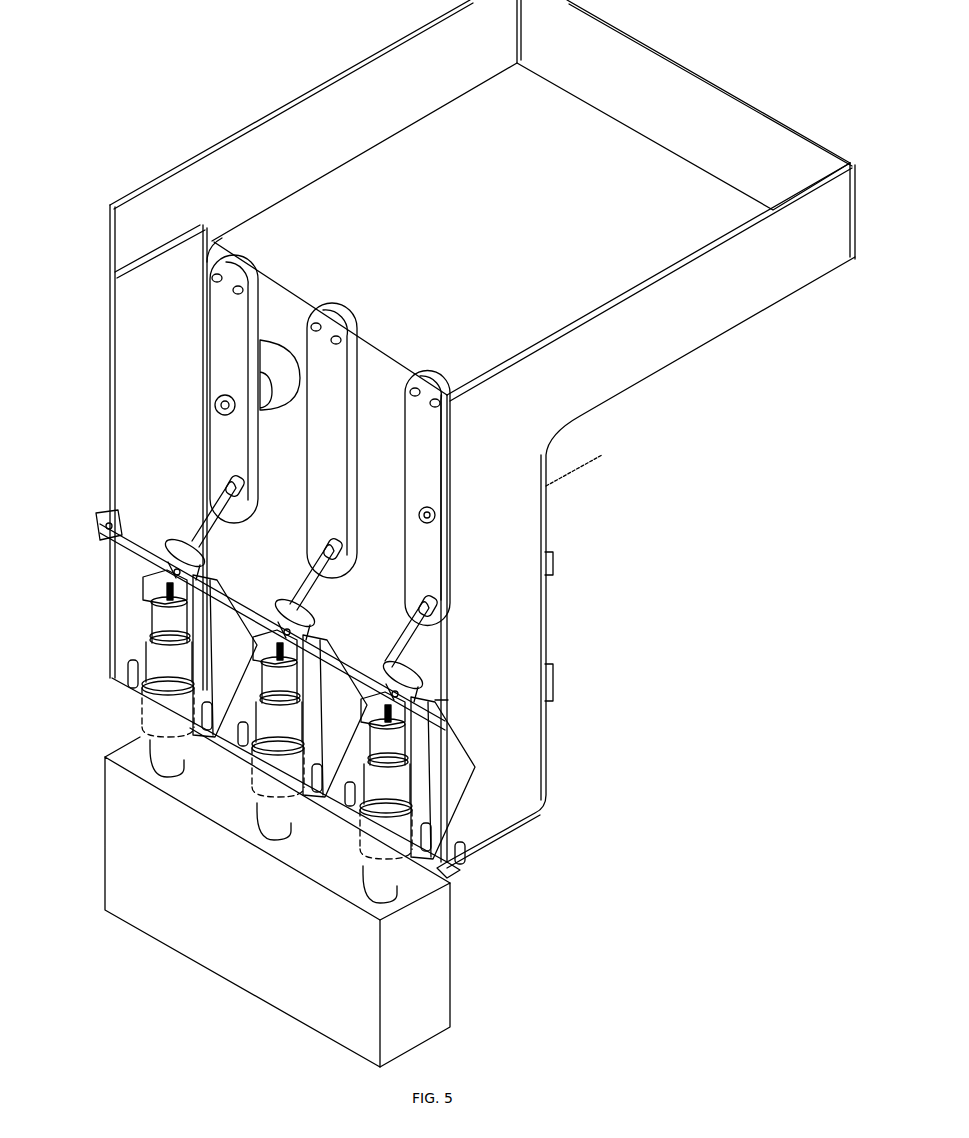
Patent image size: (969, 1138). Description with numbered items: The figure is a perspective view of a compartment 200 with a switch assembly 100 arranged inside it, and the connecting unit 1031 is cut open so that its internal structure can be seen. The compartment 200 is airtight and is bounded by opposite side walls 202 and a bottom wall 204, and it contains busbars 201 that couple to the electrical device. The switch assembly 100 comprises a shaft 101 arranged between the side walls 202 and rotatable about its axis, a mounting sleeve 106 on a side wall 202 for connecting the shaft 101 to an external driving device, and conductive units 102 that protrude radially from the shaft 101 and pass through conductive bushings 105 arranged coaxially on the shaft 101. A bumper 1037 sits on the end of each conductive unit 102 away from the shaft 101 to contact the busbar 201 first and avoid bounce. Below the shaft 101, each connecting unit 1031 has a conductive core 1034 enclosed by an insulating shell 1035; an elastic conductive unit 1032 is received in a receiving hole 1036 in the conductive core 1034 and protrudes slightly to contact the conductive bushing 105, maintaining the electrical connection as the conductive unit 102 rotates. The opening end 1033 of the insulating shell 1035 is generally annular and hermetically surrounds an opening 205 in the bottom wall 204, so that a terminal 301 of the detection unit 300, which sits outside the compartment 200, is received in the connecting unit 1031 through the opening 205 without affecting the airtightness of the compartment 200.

The switch assembly 100 is at (192, 513).
The shaft 101 is at (442, 705).
The conductive unit 102 is at (202, 540).
The conductive bushing 105 is at (195, 555).
The mounting sleeve 106 is at (100, 521).
The compartment 200 is at (296, 85).
The busbar 201 is at (232, 475).
The side wall 202 is at (135, 405).
The bottom wall 204 is at (452, 870).
The opening 205 is at (130, 700).
The detection unit 300 is at (430, 952).
The terminal 301 is at (165, 765).
The connecting unit 1031 is at (215, 605).
The elastic conductive unit 1032 is at (152, 571).
The opening end 1033 is at (125, 700).
The conductive core 1034 is at (150, 606).
The insulating shell 1035 is at (130, 650).
The receiving hole 1036 is at (155, 592).
The bumper 1037 is at (236, 484).